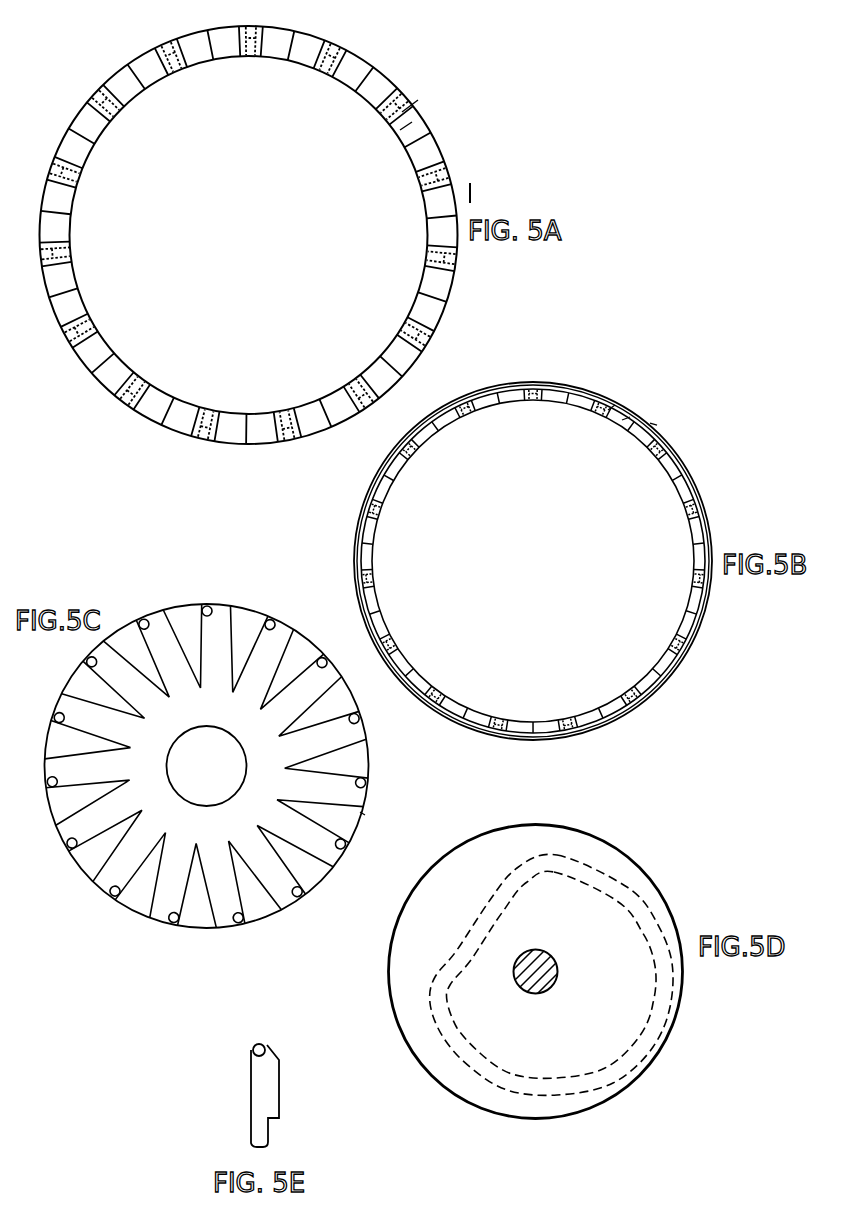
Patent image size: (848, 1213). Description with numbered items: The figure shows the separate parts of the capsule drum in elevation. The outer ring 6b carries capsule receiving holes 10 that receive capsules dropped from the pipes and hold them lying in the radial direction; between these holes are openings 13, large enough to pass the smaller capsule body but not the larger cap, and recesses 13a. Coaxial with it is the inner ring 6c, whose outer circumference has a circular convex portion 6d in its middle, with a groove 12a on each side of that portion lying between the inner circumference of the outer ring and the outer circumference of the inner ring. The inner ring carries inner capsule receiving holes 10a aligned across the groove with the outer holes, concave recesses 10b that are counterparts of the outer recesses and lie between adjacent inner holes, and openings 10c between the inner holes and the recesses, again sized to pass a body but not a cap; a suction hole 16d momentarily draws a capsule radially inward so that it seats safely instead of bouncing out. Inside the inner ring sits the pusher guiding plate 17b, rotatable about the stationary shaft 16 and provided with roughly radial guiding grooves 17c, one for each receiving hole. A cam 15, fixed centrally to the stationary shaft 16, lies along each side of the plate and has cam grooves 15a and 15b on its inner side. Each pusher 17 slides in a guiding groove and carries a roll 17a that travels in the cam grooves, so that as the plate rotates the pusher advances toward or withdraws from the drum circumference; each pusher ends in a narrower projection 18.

In FIG. 5A, the outer ring 6b is at (383, 72).
In FIG. 5A, the capsule receiving hole 10 is at (407, 90).
In FIG. 5A, the opening 13 is at (412, 103).
In FIG. 5A, the recess 13a is at (407, 127).
In FIG. 5B, the inner ring 6c is at (571, 380).
In FIG. 5B, the circular convex portion 6d is at (677, 488).
In FIG. 5B, the inner capsule receiving hole 10a is at (600, 402).
In FIG. 5B, the opening 10c is at (615, 405).
In FIG. 5B, the concave recess 10b is at (630, 417).
In FIG. 5B, the groove 12a is at (657, 425).
In FIG. 5C, the pusher guiding plate 17b is at (370, 743).
In FIG. 5C, the suction hole 16d is at (318, 792).
In FIG. 5C, the guiding groove 17c is at (365, 815).
In FIG. 5D, the cam 15 is at (628, 1085).
In FIG. 5D, the cam groove 15a is at (585, 870).
In FIG. 5D, the cam groove 15b is at (553, 947).
In FIG. 5D, the stationary shaft 16 is at (545, 978).
In FIG. 5E, the pusher 17 is at (262, 1097).
In FIG. 5E, the roll 17a is at (265, 1045).
In FIG. 5E, the projection 18 is at (277, 1120).